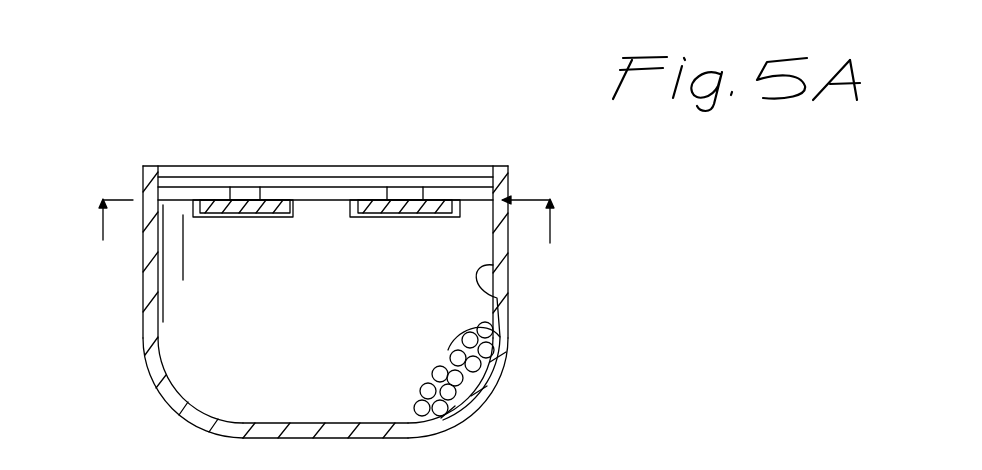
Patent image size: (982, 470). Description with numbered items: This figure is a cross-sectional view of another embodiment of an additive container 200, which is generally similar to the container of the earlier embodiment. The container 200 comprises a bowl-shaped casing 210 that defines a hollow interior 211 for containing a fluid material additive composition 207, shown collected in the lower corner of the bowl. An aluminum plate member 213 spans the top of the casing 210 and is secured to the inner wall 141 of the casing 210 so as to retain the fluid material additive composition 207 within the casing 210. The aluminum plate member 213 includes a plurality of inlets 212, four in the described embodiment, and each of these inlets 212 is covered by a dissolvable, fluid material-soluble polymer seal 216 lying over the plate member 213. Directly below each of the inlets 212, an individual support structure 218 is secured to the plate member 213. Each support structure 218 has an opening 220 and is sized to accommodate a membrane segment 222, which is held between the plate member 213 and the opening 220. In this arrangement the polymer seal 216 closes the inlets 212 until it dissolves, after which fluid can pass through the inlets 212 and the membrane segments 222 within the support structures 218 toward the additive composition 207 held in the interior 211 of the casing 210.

The container 200 is at (342, 230).
The bowl-shaped casing 210 is at (348, 302).
The hollow interior 211 is at (192, 365).
The inlets 212 is at (246, 193).
The aluminum plate member 213 is at (330, 185).
The polymer seal 216 is at (175, 180).
The support structures 218 is at (205, 220).
The opening 220 is at (237, 218).
The membrane segment 222 is at (213, 205).
The inner wall 141 is at (500, 298).
The fluid material additive composition 207 is at (490, 330).